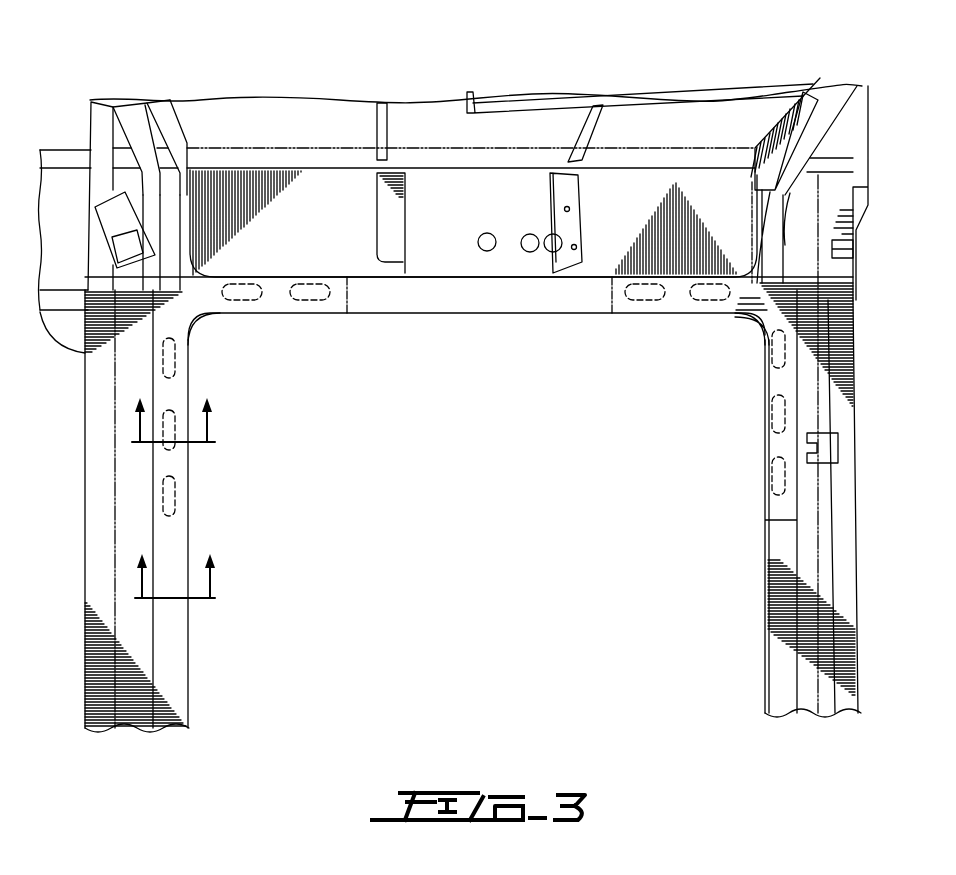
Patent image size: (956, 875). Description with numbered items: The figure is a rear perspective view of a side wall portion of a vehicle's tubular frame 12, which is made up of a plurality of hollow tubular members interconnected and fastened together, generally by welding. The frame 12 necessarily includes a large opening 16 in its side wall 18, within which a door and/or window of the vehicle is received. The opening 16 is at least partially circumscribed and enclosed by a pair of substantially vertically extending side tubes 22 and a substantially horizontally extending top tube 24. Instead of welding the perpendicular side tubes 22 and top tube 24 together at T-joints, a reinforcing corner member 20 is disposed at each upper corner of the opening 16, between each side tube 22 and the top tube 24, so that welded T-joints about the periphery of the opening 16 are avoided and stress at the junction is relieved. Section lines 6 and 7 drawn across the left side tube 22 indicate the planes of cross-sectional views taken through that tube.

The frame 12 is at (716, 72).
The opening 16 is at (556, 618).
The side wall 18 is at (442, 198).
The reinforcing corner member 20 is at (215, 336).
The side tube 22 is at (178, 672).
The top tube 24 is at (520, 297).
The section line 6- 6 is at (172, 433).
The section line 7- 7 is at (174, 589).